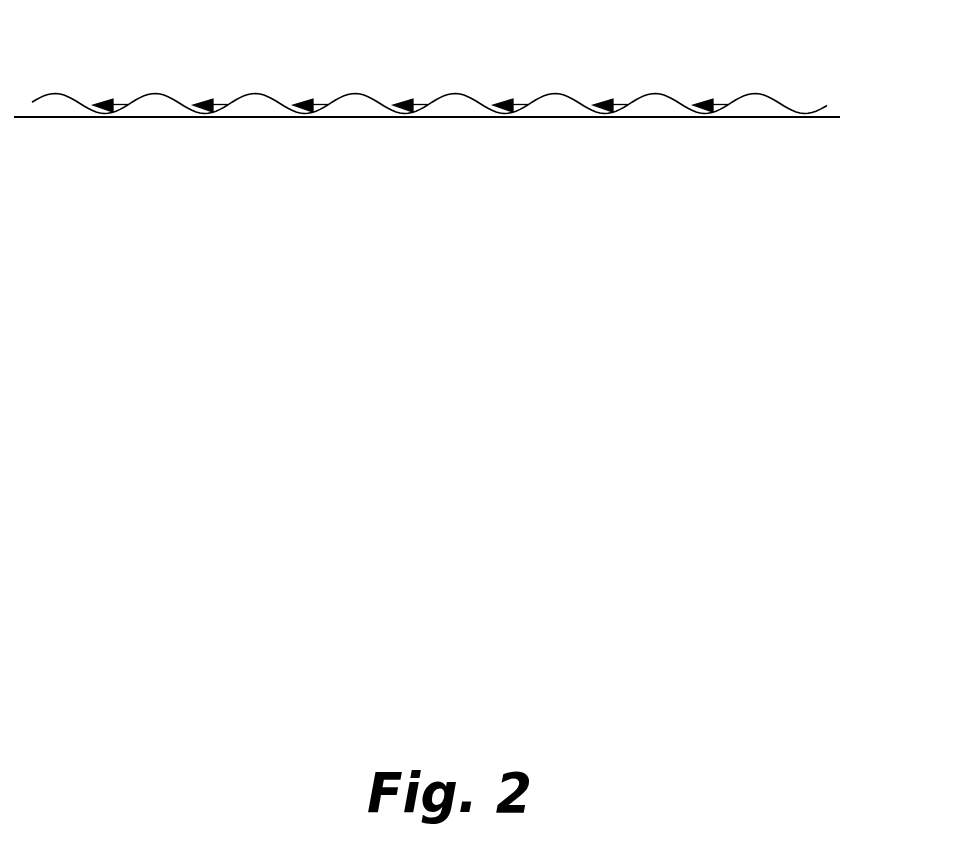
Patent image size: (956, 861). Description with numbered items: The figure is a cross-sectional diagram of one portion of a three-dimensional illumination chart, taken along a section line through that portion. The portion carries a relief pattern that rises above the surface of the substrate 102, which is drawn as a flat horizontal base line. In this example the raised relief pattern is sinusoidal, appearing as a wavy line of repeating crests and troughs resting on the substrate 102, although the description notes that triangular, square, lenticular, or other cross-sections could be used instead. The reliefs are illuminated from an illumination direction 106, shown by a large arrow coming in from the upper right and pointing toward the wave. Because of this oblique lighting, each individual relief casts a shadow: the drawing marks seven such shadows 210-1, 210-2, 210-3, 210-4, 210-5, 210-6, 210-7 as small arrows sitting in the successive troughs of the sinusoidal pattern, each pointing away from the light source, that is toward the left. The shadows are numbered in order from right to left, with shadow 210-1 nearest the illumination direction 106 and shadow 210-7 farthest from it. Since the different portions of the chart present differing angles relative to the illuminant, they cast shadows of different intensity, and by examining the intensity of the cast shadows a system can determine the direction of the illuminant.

The substrate 102 is at (347, 118).
The illumination direction 106 is at (883, 79).
The shadow 210-1 is at (727, 107).
The shadow 210-2 is at (627, 107).
The shadow 210-3 is at (527, 107).
The shadow 210-4 is at (427, 107).
The shadow 210-5 is at (327, 107).
The shadow 210-6 is at (227, 107).
The shadow 210-7 is at (127, 107).